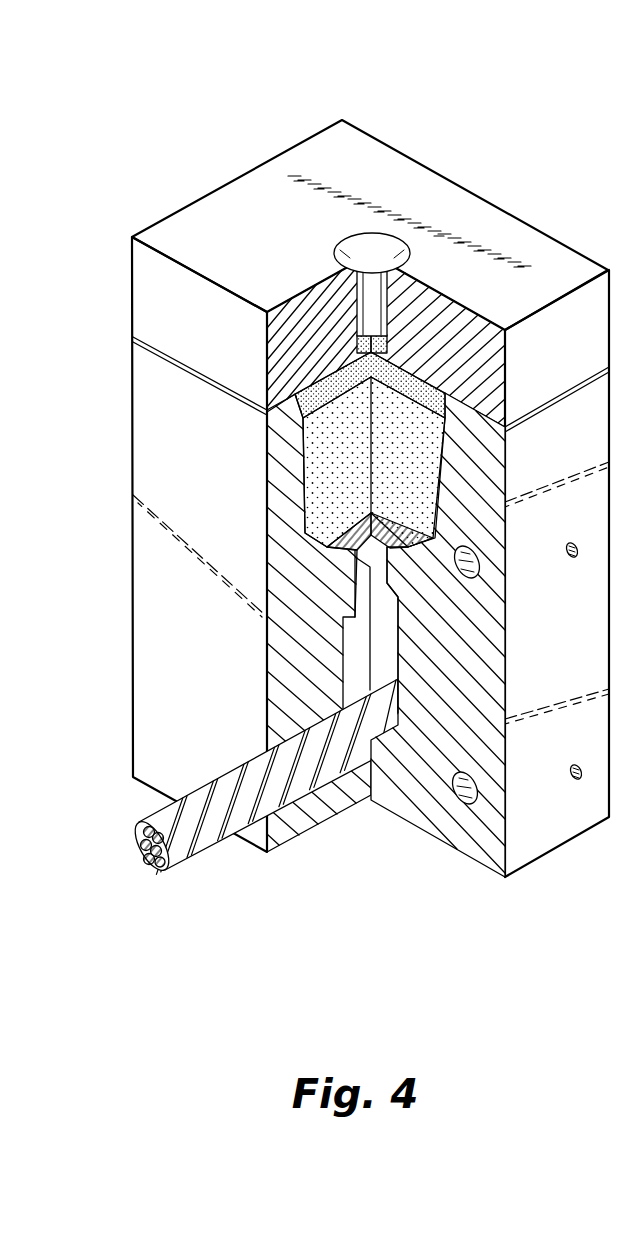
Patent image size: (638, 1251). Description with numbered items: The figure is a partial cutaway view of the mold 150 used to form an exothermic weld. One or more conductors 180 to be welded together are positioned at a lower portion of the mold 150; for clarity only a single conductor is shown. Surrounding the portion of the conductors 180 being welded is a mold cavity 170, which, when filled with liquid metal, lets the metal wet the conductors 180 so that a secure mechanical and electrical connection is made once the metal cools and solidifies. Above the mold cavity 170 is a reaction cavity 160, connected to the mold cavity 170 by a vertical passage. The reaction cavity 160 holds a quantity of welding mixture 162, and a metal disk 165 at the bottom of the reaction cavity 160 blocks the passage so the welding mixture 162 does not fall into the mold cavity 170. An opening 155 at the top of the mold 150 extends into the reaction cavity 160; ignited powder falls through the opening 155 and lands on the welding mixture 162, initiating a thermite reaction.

The mold 150 is at (105, 185).
The opening 155 is at (379, 252).
The reaction cavity 160 is at (325, 455).
The welding mixture 162 is at (412, 447).
The metal disk 165 is at (352, 553).
The mold cavity 170 is at (357, 638).
The conductors 180 is at (200, 853).